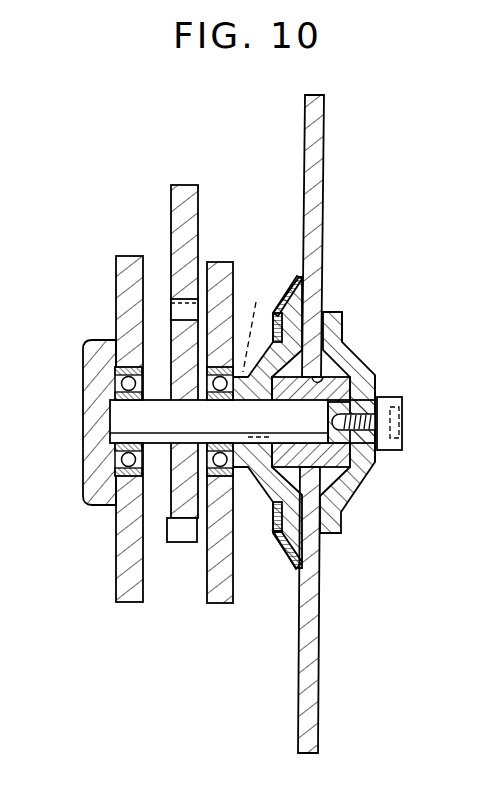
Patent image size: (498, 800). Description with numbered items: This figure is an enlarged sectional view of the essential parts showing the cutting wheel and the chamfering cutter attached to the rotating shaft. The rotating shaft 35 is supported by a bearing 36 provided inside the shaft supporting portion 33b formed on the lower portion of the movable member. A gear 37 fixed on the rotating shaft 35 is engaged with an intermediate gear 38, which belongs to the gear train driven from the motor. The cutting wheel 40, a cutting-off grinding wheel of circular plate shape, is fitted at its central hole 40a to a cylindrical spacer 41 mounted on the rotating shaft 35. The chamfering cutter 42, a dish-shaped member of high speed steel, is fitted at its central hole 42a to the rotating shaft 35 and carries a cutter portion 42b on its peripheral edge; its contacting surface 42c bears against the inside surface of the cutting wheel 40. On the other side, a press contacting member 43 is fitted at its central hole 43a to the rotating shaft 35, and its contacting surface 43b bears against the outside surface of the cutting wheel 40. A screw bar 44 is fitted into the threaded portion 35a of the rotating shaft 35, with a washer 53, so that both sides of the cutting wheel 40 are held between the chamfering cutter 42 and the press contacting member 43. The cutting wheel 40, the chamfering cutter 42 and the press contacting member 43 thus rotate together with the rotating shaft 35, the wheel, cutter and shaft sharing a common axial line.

The shaft supporting portion 33b is at (90, 340).
The rotating shaft 35 is at (122, 416).
The threaded portion 35a is at (374, 470).
The bearing 36 is at (115, 380).
The gear 37 is at (178, 543).
The intermediate gear 38 is at (199, 193).
The cutting wheel 40 is at (325, 160).
The central hole 40a is at (342, 339).
The cylindrical spacer 41 is at (331, 367).
The chamfering cutter 42 is at (296, 281).
The central hole 42a is at (264, 325).
The cutter portion 42b is at (282, 560).
The contacting surface 42c is at (305, 283).
The press contacting member 43 is at (359, 483).
The central hole 43a is at (377, 374).
The contacting surface 43b is at (320, 548).
The screw bar 44 is at (402, 452).
The washer 53 is at (380, 388).